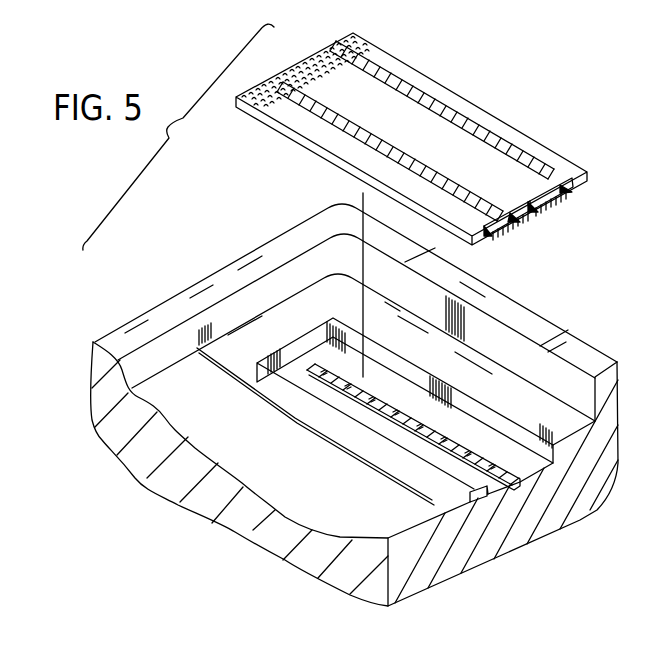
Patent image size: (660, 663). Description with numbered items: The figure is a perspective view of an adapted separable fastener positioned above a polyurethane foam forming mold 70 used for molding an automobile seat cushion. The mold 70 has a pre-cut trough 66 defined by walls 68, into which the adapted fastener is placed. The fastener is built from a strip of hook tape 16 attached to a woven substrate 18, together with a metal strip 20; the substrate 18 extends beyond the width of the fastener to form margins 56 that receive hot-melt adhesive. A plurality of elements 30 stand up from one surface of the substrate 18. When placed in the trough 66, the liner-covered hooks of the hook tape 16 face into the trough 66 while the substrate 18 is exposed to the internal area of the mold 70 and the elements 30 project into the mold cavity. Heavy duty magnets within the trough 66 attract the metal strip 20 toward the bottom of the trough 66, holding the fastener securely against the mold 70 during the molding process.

The substrate 18 is at (279, 136).
The elements 30 is at (318, 50).
The margins 56 is at (372, 163).
The hook tape 16 is at (522, 226).
The metal strip 20 is at (550, 204).
The walls 68 is at (318, 335).
The mold 70 is at (462, 460).
The trough 66 is at (485, 496).